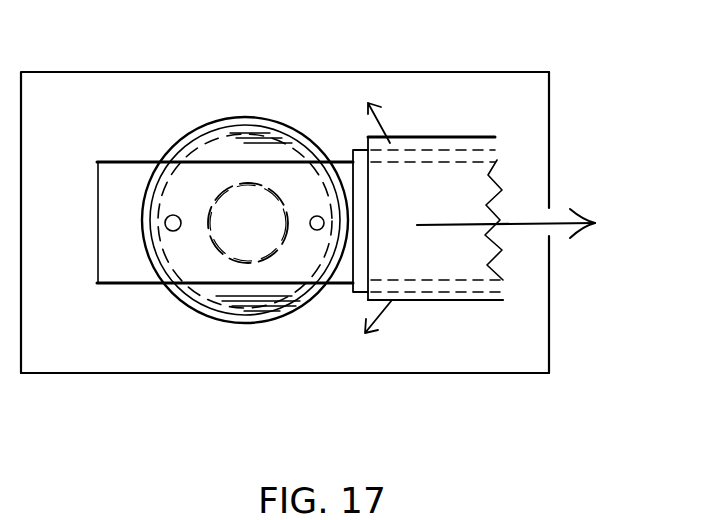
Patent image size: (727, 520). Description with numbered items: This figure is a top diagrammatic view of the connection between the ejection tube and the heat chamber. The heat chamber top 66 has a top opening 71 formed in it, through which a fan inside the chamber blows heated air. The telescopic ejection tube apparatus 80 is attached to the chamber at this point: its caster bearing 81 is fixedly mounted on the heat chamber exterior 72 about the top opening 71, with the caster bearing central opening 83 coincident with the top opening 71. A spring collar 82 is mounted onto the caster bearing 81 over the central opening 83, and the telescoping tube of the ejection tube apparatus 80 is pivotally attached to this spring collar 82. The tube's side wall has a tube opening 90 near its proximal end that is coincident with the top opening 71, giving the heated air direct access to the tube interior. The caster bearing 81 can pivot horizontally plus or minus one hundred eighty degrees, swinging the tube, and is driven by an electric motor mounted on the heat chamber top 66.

The heat chamber top 66 is at (80, 345).
The heat chamber exterior 72 is at (532, 349).
The spring collar 82 is at (213, 250).
The caster bearing 81 is at (275, 124).
The caster bearing central opening 83 is at (227, 200).
The heat chamber top opening 71 is at (245, 200).
The tube opening 90 is at (247, 252).
The telescopic ejection tube apparatus 80 is at (407, 172).